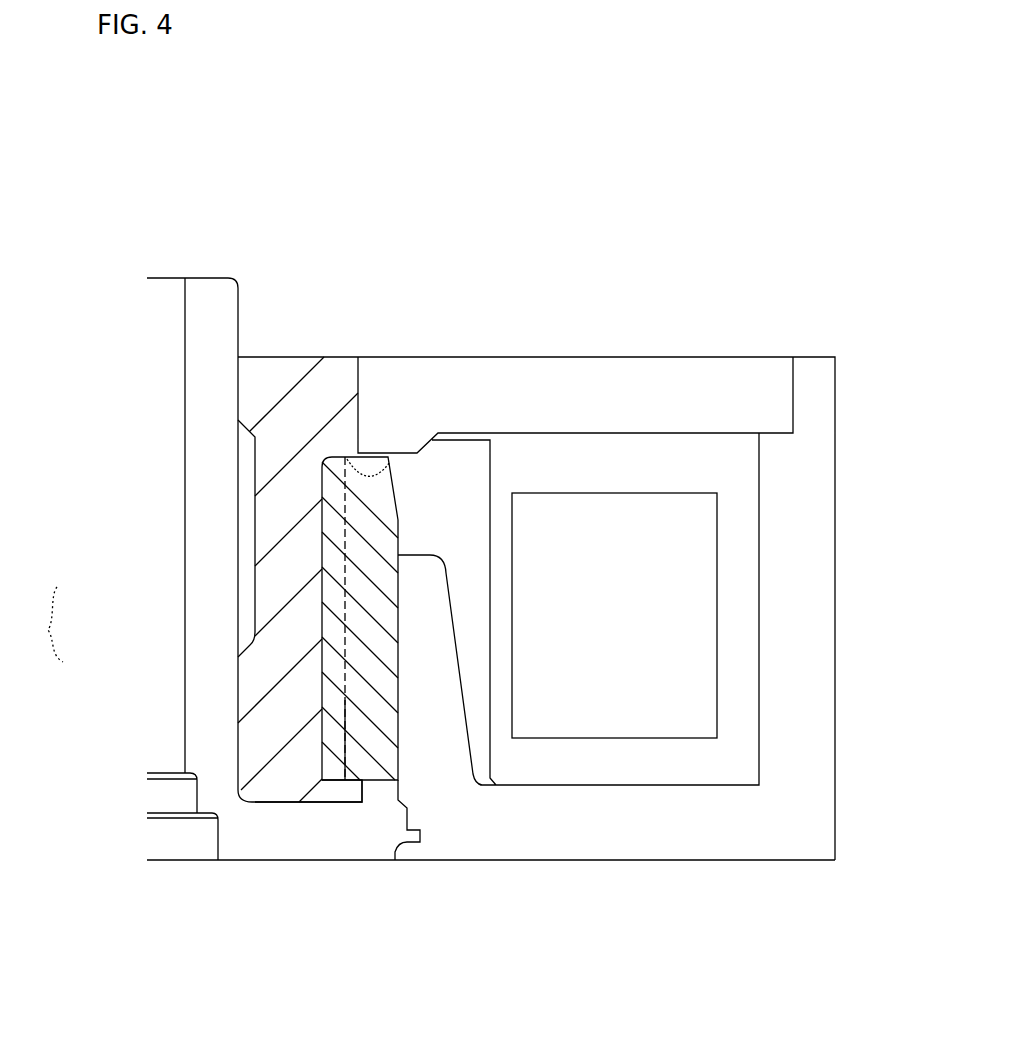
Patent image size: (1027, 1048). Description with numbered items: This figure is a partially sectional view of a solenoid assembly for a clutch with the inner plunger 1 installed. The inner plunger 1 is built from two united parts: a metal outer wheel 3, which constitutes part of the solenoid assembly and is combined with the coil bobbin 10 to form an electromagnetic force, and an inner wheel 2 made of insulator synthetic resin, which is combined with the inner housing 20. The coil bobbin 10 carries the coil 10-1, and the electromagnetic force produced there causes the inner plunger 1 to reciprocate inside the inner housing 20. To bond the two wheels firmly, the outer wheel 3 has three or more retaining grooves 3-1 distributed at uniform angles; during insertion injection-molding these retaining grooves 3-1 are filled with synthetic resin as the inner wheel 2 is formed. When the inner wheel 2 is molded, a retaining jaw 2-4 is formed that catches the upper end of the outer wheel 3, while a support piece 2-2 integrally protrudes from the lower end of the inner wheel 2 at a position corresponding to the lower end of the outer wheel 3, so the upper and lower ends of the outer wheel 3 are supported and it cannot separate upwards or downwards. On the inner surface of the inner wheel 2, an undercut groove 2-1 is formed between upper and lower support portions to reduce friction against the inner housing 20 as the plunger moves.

The inner plunger 1 is at (46, 624).
The inner wheel 2 is at (375, 628).
The undercut groove 2-1 is at (161, 434).
The support piece 2-2 is at (338, 793).
The retaining jaw 2-4 is at (393, 462).
The outer wheel 3 is at (262, 672).
The retaining groove 3-1 is at (345, 741).
The coil bobbin 10 is at (640, 317).
The coil 10-1 is at (685, 622).
The inner housing 20 is at (227, 307).